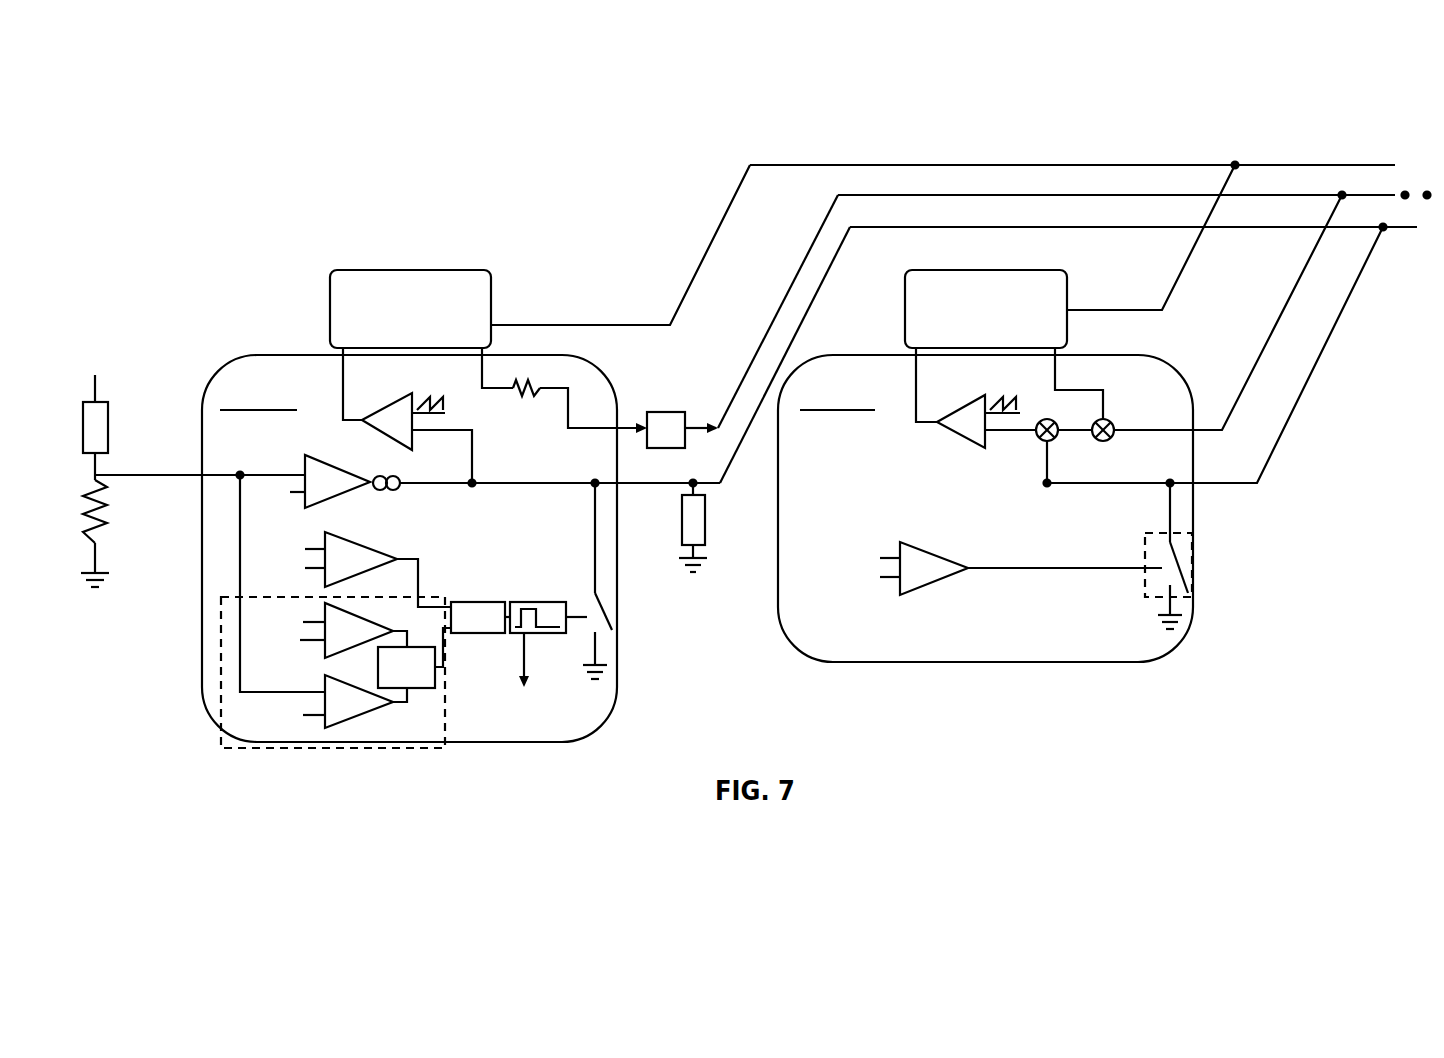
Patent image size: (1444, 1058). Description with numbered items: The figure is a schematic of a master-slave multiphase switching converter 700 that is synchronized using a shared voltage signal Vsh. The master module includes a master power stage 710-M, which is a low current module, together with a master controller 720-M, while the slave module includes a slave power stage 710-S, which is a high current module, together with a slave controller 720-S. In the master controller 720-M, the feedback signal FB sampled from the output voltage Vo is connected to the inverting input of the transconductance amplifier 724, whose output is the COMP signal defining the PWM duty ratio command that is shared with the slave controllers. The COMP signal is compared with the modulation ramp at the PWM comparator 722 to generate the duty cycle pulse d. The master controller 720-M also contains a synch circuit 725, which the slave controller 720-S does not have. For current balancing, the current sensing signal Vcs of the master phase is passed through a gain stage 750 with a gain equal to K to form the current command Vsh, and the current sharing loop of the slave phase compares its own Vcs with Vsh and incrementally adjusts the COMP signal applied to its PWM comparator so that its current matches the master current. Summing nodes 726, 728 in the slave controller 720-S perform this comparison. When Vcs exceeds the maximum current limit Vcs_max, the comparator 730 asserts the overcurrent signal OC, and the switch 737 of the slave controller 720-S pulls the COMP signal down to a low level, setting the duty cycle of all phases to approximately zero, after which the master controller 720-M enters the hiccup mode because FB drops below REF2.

The master-slave multiphase switching converter 700 is at (218, 188).
The master power stage 710-M is at (333, 270).
The slave power stage 710-S is at (953, 270).
The master controller 720-M is at (446, 565).
The slave controller 720-S is at (1022, 505).
The PWM comparator 722 is at (387, 437).
The transconductance amplifier 724 is at (345, 498).
The synch circuit 725 is at (249, 752).
The slave PWM comparator 726 is at (1036, 437).
The summing node 728 is at (1110, 441).
The comparator 730 is at (925, 585).
The switch 737 is at (1196, 598).
The gain stage 750 is at (665, 412).